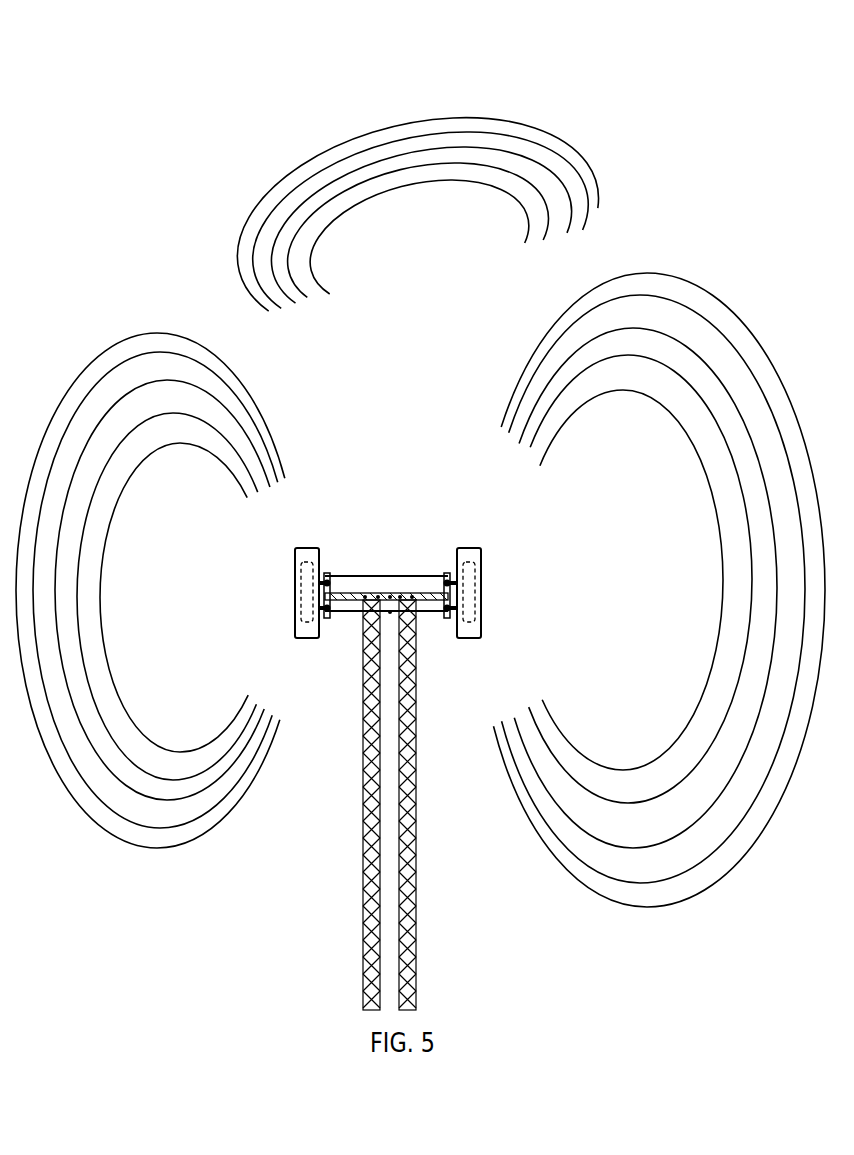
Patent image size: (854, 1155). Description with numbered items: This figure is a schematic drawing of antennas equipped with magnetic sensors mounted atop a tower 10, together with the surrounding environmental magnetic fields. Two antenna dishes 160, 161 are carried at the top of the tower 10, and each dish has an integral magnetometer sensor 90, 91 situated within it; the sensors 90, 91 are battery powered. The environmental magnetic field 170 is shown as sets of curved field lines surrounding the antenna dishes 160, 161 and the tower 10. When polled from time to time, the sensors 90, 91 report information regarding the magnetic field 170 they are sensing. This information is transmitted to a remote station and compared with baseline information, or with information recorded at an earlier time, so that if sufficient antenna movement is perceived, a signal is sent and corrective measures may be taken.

The tower 10 is at (340, 855).
The magnetometer sensor 90 is at (300, 605).
The magnetometer sensor 91 is at (480, 603).
The antenna dish 160 is at (305, 537).
The antenna dish 161 is at (480, 542).
The magnetic field 170 is at (593, 142).